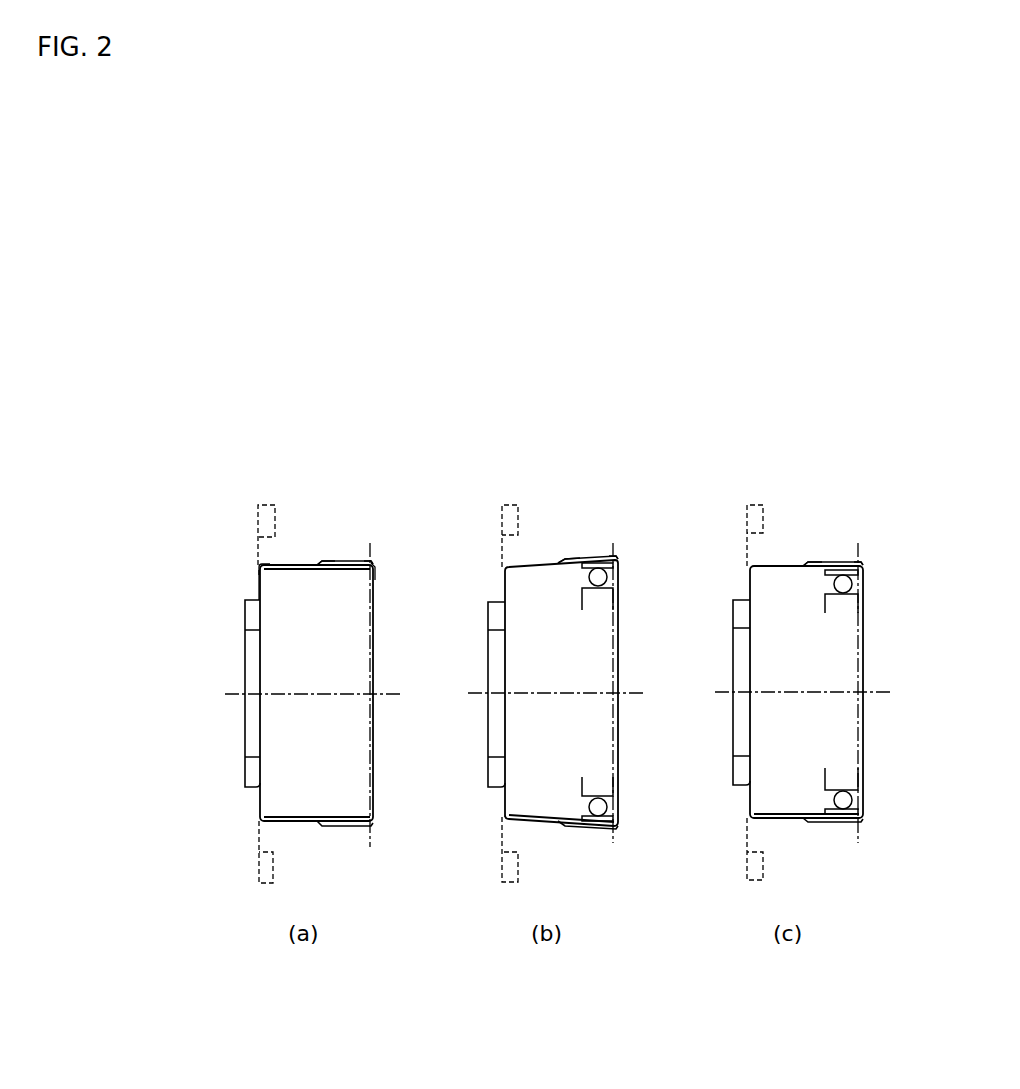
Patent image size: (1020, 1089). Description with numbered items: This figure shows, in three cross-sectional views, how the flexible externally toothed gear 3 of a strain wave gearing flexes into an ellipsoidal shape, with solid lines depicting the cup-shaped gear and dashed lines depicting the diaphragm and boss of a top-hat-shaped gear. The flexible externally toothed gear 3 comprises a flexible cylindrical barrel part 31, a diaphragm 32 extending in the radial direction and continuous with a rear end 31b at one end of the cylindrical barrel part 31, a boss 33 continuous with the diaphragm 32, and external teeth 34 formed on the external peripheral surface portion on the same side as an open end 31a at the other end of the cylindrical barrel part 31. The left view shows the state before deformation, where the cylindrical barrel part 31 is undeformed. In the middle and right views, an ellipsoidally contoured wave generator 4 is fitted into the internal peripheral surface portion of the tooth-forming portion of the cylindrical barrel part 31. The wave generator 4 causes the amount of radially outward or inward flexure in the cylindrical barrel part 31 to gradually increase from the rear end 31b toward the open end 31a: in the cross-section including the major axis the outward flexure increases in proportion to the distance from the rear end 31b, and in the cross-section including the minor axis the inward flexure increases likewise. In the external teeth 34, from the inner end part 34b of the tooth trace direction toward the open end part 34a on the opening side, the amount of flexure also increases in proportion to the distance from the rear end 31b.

The flexible externally toothed gear 3 is at (284, 494).
The cylindrical barrel part 31 is at (296, 571).
The open end 31a is at (376, 566).
The rear end 31b is at (259, 564).
The diaphragm 32 is at (257, 587).
The boss 33 is at (252, 617).
The external teeth 34 is at (355, 556).
The open end part 34a is at (373, 563).
The inner end part 34b is at (328, 563).
The wave generator 4 is at (619, 598).